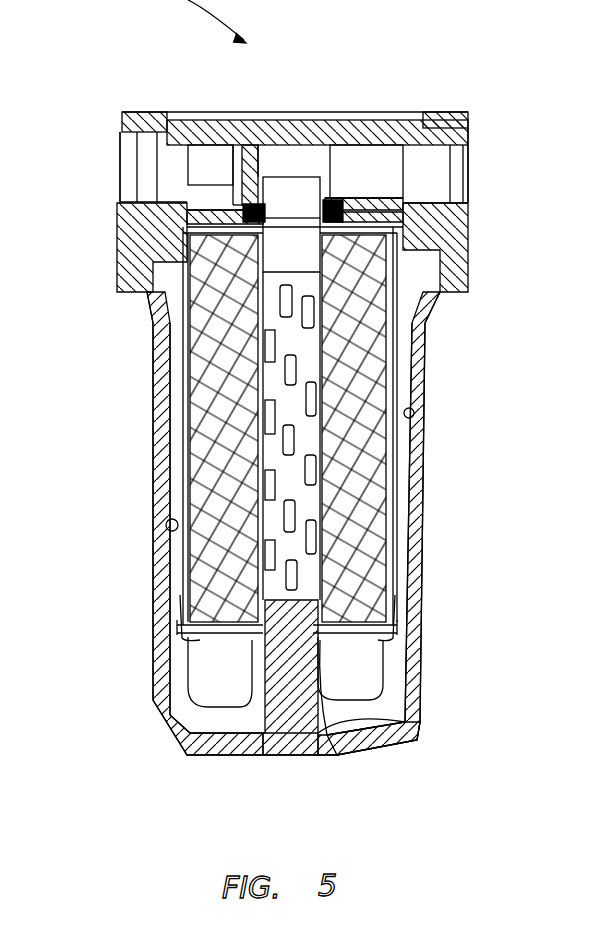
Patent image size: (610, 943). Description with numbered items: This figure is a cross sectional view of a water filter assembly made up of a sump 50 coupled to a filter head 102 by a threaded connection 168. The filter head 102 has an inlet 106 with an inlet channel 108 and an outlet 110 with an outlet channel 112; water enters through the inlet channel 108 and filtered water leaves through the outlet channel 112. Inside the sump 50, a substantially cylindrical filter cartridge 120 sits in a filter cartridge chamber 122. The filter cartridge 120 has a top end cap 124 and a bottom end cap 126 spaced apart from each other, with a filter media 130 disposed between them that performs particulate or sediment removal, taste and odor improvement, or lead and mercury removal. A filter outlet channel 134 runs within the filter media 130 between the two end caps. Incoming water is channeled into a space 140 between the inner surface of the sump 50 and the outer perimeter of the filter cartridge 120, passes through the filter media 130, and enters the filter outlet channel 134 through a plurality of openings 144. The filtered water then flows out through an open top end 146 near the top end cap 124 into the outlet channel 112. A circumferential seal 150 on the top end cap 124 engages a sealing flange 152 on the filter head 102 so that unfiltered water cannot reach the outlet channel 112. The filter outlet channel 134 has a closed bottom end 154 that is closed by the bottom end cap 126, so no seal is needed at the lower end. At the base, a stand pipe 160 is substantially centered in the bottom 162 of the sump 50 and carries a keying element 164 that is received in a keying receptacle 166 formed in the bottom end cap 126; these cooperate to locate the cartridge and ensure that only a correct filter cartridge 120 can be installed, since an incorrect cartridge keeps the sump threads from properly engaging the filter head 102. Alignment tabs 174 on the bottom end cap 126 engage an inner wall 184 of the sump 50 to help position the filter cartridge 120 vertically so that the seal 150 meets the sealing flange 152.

The sump 50 is at (425, 488).
The filter head 102 is at (200, 108).
The inlet 106 is at (122, 112).
The inlet channel 108 is at (118, 168).
The outlet 110 is at (446, 112).
The outlet channel 112 is at (470, 162).
The filter cartridge 120 is at (180, 362).
The filter cartridge chamber 122 is at (178, 510).
The top end cap 124 is at (190, 248).
The bottom end cap 126 is at (205, 658).
The filter media 130 is at (396, 537).
The filter outlet channel 134 is at (265, 525).
The space 140 is at (184, 432).
The openings 144 is at (312, 485).
The open top end 146 is at (292, 185).
The circumferential seal 150 is at (353, 196).
The sealing flange 152 is at (328, 205).
The closed bottom end 154 is at (195, 610).
The stand pipe 160 is at (310, 635).
The bottom 162 is at (420, 720).
The keying element 164 is at (263, 600).
The keying receptacle 166 is at (402, 632).
The threaded connection 168 is at (456, 242).
The alignment tabs 174 is at (178, 593).
The inner wall 184 is at (166, 525).